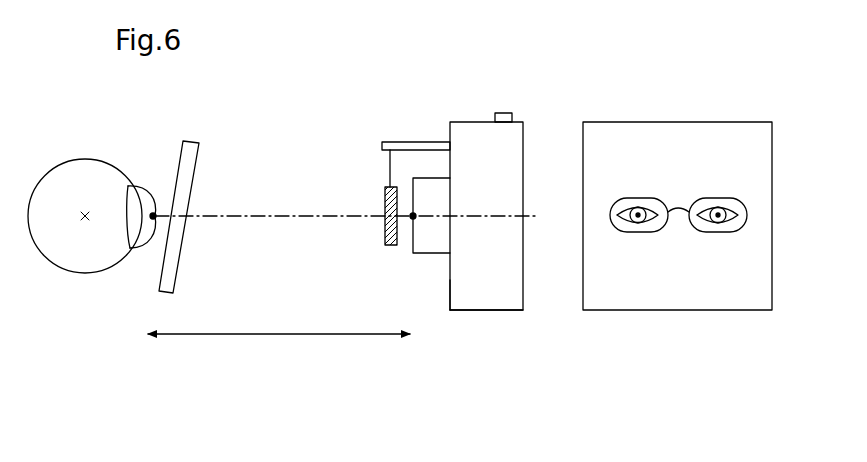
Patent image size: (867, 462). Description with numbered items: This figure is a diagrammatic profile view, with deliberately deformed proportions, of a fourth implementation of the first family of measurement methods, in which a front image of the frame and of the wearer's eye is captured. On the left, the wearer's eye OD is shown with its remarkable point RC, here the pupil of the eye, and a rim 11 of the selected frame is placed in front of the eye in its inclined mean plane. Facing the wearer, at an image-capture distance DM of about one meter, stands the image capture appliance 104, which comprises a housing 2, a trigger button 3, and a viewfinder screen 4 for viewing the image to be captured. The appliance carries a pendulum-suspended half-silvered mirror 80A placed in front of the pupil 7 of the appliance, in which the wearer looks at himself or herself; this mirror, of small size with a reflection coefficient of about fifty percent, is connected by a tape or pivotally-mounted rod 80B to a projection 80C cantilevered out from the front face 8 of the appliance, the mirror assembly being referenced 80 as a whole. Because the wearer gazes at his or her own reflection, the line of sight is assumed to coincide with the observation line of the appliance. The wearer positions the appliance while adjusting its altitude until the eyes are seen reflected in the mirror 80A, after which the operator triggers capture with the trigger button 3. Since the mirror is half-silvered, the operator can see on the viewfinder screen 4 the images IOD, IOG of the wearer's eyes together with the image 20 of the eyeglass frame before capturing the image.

The wearer's eye OD is at (82, 272).
The remarkable point RC is at (153, 212).
The rim 11 is at (187, 149).
The target / test pattern support 80 is at (374, 157).
The half-silvered mirror 80A is at (383, 203).
The pivotally-mounted rod 80B is at (387, 152).
The projection 80C is at (400, 142).
The pupil of the image capture appliance 7 is at (413, 216).
The housing 2 is at (467, 310).
The trigger button 3 is at (503, 113).
The front face 8 is at (450, 293).
The image capture appliance 104 is at (520, 320).
The image-capture distance DM is at (279, 348).
The viewfinder screen 4 is at (668, 310).
The image of the eyeglass frame 20 is at (632, 232).
The image of the wearer's right eye IOD is at (647, 227).
The image of the wearer's left eye IOG is at (673, 211).